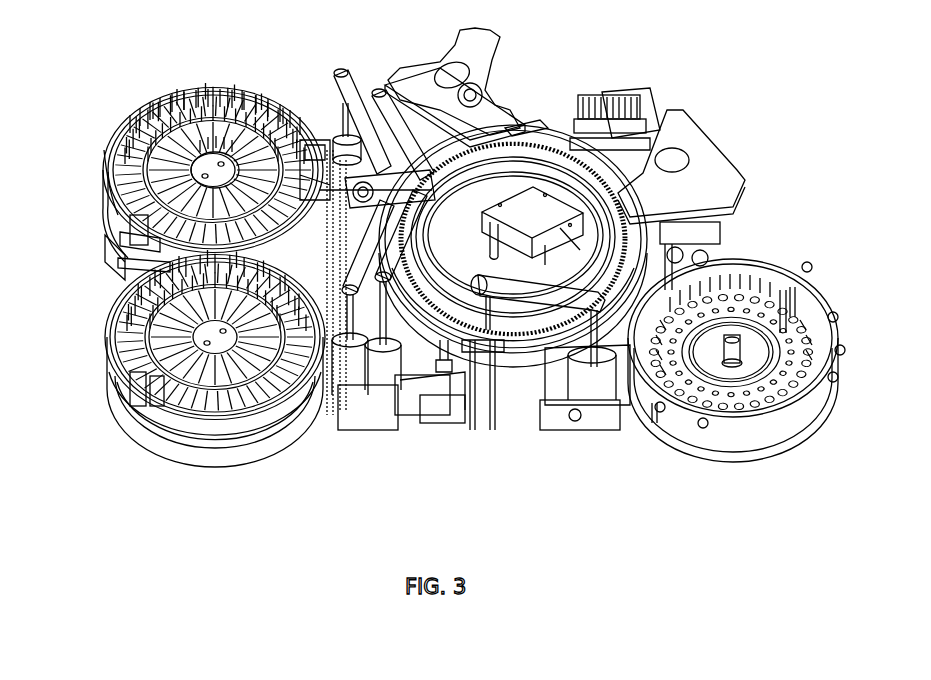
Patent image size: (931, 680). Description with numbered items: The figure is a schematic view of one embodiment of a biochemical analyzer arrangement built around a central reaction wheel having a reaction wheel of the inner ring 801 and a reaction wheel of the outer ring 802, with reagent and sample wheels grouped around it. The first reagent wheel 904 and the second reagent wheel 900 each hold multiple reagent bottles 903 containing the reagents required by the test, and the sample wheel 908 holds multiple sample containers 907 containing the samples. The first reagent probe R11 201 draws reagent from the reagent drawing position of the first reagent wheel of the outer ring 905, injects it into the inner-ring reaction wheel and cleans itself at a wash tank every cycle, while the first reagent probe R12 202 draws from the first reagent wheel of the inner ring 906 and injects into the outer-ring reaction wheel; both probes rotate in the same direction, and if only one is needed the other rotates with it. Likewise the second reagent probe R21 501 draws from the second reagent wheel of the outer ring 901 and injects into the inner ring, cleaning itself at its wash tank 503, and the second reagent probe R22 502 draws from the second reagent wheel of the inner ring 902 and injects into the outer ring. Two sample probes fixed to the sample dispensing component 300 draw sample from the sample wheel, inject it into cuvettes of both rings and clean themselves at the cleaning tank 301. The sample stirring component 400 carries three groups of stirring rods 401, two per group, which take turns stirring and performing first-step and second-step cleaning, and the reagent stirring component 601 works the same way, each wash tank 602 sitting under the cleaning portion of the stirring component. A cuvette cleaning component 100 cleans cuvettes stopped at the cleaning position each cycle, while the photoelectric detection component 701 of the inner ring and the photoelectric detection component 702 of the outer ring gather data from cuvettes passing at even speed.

The cuvette cleaning component 100 is at (582, 110).
The first reagent probe R11 201 is at (140, 277).
The first reagent probe R12 202 is at (133, 232).
The sample dispensing component 300 is at (479, 280).
The cleaning tank 301 is at (455, 375).
The sample stirring component 400 is at (425, 67).
The stirring rods 401 is at (513, 140).
The second reagent probe R21 501 is at (380, 83).
The second reagent probe R22 502 is at (345, 85).
The wash tank of the second reagent probe R21 503 is at (320, 140).
The reagent stirring component 601 is at (675, 137).
The wash tank 602 is at (723, 242).
The photoelectric detection component of the reaction wheel of the inner ring 701 is at (520, 222).
The photoelectric detection component of the reaction wheel of the outer ring 702 is at (630, 95).
The reaction wheel of the inner ring 801 is at (537, 345).
The reaction wheel of the outer ring 802 is at (517, 345).
The second reagent wheel 900 is at (162, 108).
The second reagent wheel of the outer ring 901 is at (192, 110).
The second reagent wheel of the inner ring 902 is at (237, 137).
The reagent bottles 903 is at (107, 142).
The first reagent wheel 904 is at (223, 420).
The first reagent wheel of the outer ring 905 is at (110, 320).
The first reagent wheel of the inner ring 906 is at (270, 400).
The sample containers 907 is at (803, 273).
The sample wheel 908 is at (757, 283).